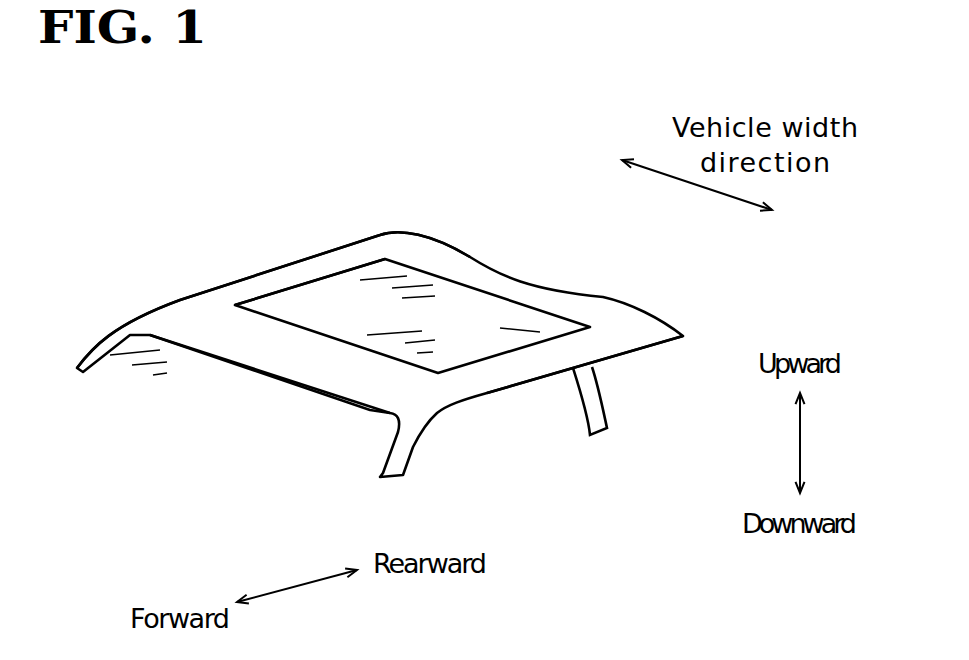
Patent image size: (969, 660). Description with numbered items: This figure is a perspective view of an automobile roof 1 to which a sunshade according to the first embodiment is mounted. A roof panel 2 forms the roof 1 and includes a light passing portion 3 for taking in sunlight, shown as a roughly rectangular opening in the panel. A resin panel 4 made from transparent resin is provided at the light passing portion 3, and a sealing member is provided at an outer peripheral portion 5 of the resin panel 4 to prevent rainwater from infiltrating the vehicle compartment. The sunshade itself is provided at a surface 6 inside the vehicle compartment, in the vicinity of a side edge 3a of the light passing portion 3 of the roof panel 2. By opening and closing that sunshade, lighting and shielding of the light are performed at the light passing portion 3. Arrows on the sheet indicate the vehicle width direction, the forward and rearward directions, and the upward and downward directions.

The roof 1 is at (463, 205).
The roof panel 2 is at (213, 305).
The light passing portion 3 is at (461, 298).
The side edge 3a is at (318, 278).
The resin panel 4 is at (563, 338).
The outer peripheral portion 5 is at (350, 347).
The surface 6 is at (317, 318).